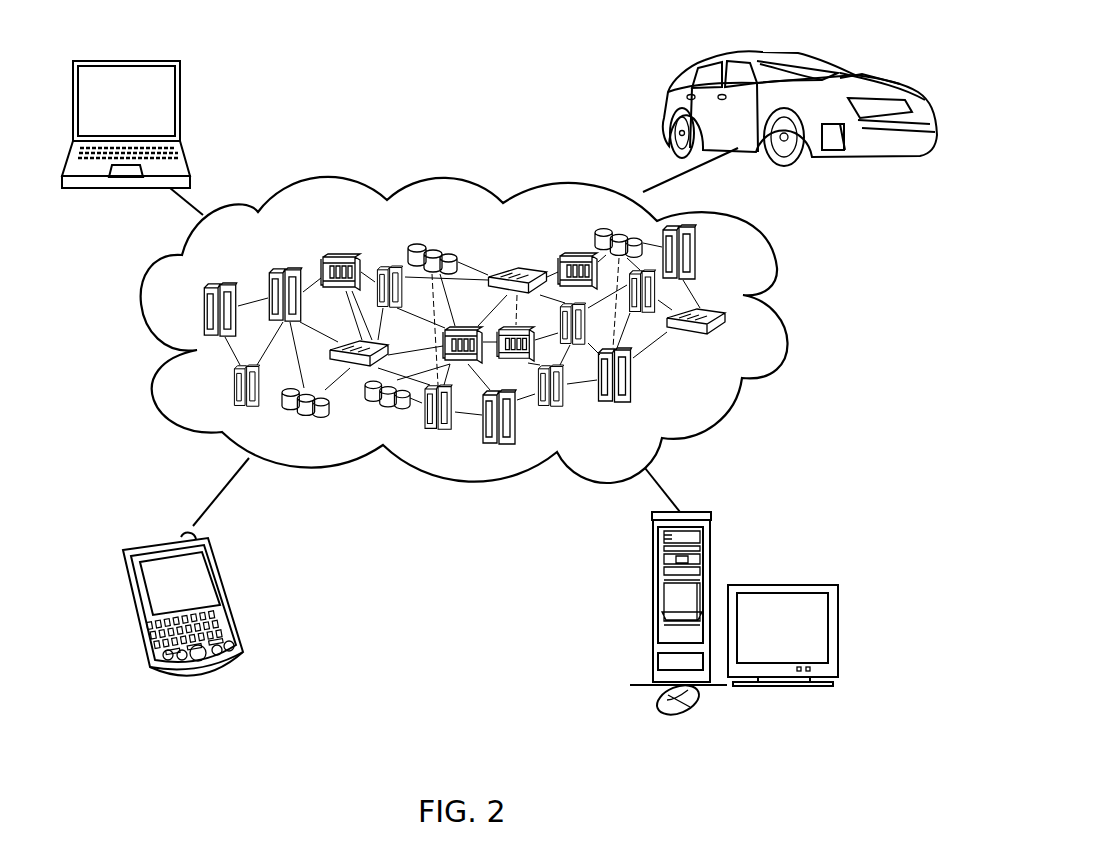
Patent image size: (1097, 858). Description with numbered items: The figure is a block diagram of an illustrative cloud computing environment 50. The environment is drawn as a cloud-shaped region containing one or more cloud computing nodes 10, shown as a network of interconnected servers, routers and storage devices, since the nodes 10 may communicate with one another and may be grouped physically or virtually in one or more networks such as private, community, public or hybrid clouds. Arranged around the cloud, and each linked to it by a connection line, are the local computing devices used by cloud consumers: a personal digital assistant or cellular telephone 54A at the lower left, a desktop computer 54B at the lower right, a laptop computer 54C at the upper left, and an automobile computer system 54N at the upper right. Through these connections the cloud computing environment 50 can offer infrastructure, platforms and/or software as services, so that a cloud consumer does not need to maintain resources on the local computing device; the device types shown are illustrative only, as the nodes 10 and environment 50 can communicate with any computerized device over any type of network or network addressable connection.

The cloud computing nodes 10 is at (716, 399).
The cloud computing environment 50 is at (782, 320).
The personal digital assistant or cellular telephone 54A is at (222, 570).
The desktop computer 54B is at (652, 558).
The laptop computer 54C is at (180, 102).
The automobile computer system 54N is at (665, 107).